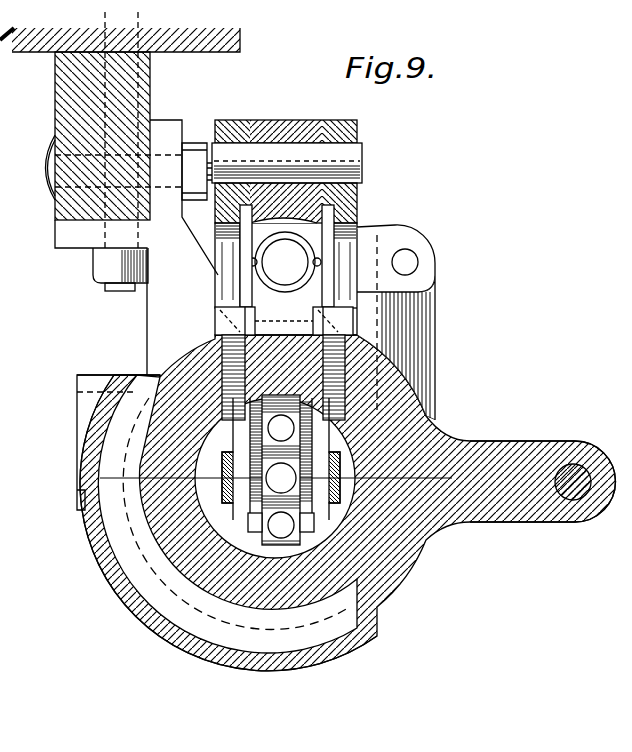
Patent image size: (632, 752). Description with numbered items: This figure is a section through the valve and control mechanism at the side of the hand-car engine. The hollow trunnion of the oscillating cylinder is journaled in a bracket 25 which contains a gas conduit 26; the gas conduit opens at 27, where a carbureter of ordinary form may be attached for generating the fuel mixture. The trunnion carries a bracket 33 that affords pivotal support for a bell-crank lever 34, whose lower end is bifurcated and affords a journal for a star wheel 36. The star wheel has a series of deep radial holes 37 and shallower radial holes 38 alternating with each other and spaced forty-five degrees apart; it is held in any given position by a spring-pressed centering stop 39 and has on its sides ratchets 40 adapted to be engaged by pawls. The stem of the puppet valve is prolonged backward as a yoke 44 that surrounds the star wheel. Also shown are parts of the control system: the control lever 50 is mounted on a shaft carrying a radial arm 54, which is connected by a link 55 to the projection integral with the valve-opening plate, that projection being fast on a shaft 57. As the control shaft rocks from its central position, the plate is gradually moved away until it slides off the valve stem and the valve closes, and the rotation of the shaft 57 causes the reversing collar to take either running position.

The bracket 25 is at (370, 586).
The gas conduit 26 is at (278, 648).
The gas conduit opening 27 is at (77, 446).
The bracket 33 is at (218, 333).
The bell-crank lever 34 is at (286, 132).
The star wheel 36 is at (287, 548).
The deep radial holes 37 is at (281, 524).
The shallower radial holes 38 is at (281, 476).
The spring-pressed centering stop 39 is at (417, 400).
The ratchets 40 is at (308, 533).
The yoke 44 is at (358, 481).
The control lever 50 is at (615, 262).
The radial arm 54 is at (381, 232).
The link 55 is at (417, 336).
The shaft 57 is at (578, 487).